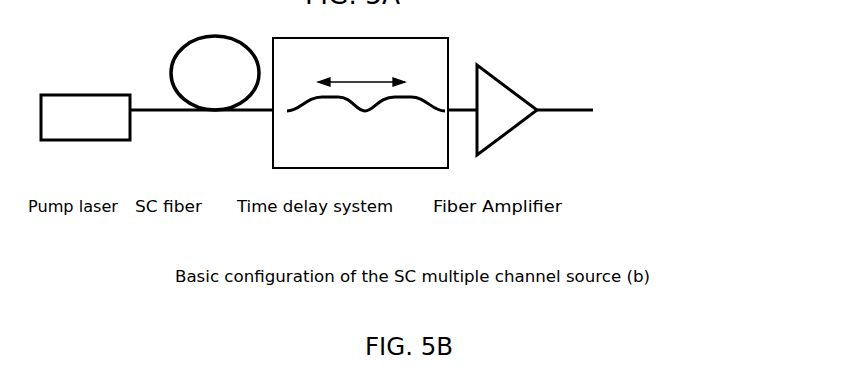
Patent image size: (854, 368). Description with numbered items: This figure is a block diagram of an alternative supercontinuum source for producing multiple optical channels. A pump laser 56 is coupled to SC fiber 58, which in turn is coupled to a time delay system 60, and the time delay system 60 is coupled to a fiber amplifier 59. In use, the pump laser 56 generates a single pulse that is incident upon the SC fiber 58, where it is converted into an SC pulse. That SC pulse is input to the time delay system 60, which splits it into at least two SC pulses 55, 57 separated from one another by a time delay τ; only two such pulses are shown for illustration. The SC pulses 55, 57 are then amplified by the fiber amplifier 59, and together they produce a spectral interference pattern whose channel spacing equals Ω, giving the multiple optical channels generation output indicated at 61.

The SC pulse 55 is at (322, 97).
The pump laser 56 is at (70, 95).
The SC pulse 57 is at (426, 97).
The SC fiber 58 is at (178, 51).
The fiber amplifier 59 is at (505, 85).
The time delay system 60 is at (400, 168).
The multiple optical channels generation output 61 is at (668, 68).